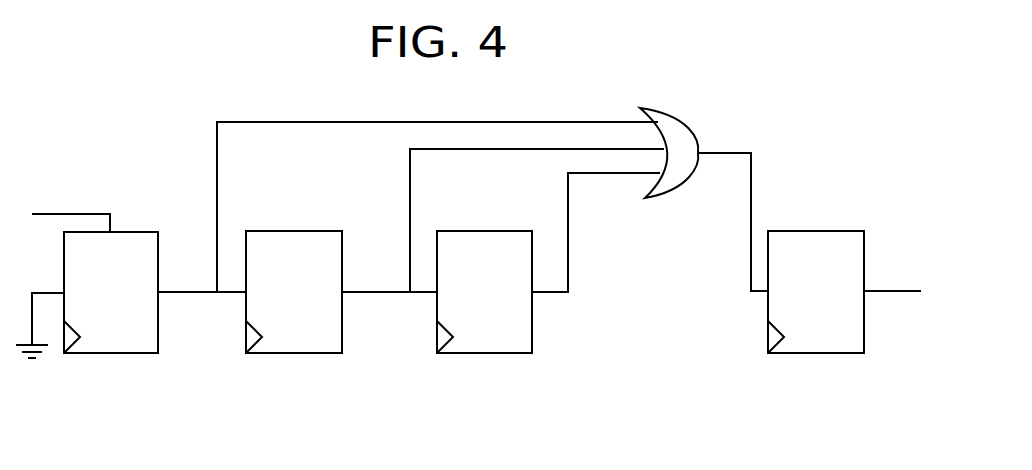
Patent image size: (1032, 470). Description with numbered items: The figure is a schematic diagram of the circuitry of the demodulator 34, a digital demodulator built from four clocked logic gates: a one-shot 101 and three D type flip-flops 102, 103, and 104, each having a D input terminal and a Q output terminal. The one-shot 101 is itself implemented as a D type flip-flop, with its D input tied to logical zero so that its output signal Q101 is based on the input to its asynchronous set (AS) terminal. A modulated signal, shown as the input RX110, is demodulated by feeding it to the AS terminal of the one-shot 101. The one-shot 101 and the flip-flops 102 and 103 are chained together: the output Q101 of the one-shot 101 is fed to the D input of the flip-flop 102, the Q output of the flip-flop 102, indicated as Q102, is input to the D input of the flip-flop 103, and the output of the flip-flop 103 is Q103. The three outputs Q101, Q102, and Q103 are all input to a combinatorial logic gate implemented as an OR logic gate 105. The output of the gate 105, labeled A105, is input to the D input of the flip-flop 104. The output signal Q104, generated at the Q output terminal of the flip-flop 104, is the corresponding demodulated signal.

The demodulator 34 is at (240, 82).
The one-shot 101 is at (97, 353).
The flip-flop 102 is at (302, 353).
The flip-flop 103 is at (500, 353).
The flip-flop 104 is at (820, 353).
The OR logic gate 105 is at (689, 184).
The input RX110 is at (66, 210).
The output signal of one-shot Q101 is at (408, 226).
The Q output of flip-flop Q102 is at (503, 240).
The output of flip-flop Q103 is at (596, 252).
The output signal Q104 is at (894, 311).
The output of gate A105 is at (733, 203).